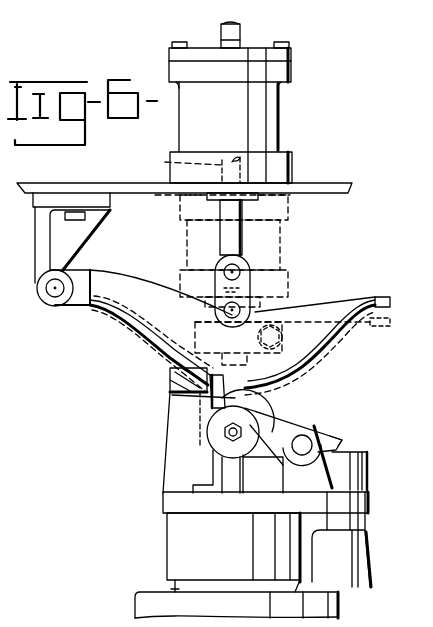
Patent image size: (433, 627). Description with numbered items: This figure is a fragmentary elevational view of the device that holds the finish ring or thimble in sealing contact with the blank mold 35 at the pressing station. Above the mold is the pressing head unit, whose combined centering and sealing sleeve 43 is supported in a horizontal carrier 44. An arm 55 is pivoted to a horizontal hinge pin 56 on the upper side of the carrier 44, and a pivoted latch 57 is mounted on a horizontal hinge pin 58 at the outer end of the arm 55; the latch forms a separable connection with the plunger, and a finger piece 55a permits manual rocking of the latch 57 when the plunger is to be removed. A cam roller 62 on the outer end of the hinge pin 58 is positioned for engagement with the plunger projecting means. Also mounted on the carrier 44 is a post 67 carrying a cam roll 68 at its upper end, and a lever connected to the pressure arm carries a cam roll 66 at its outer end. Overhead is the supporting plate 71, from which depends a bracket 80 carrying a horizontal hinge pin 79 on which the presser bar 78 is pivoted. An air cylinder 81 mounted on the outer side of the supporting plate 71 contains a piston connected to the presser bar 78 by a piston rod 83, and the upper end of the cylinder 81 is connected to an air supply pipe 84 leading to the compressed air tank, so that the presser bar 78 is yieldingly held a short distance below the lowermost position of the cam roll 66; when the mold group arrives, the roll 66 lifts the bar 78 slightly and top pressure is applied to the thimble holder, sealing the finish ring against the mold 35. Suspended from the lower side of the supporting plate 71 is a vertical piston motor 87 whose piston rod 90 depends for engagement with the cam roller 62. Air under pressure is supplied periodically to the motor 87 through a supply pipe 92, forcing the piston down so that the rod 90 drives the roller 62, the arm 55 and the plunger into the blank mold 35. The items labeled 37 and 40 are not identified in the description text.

The blank mold 35 is at (140, 600).
The fastening pin 37 is at (175, 588).
The feed mechanism 40 is at (385, 498).
The combined centering and sealing sleeve 43 is at (175, 540).
The horizontal carrier 44 is at (174, 502).
The arm 55 is at (283, 465).
The finger piece 55a is at (332, 438).
The horizontal hinge pin 56 is at (303, 443).
The pivoted latch 57 is at (200, 396).
The horizontal hinge pin 58 is at (229, 434).
The cam roller 62 is at (252, 430).
The cam roll 66 is at (258, 412).
The post 67 is at (175, 428).
The cam roll 68 is at (178, 370).
The supporting plate 71 is at (332, 182).
The presser bar 78 is at (366, 300).
The horizontal hinge pin 79 is at (58, 293).
The bracket 80 is at (78, 232).
The air cylinder 81 is at (277, 108).
The piston rod 83 is at (238, 235).
The air supply pipe 84 is at (238, 30).
The vertical piston motor 87 is at (288, 244).
The piston rod 90 is at (245, 358).
The supply pipe 92 is at (191, 166).